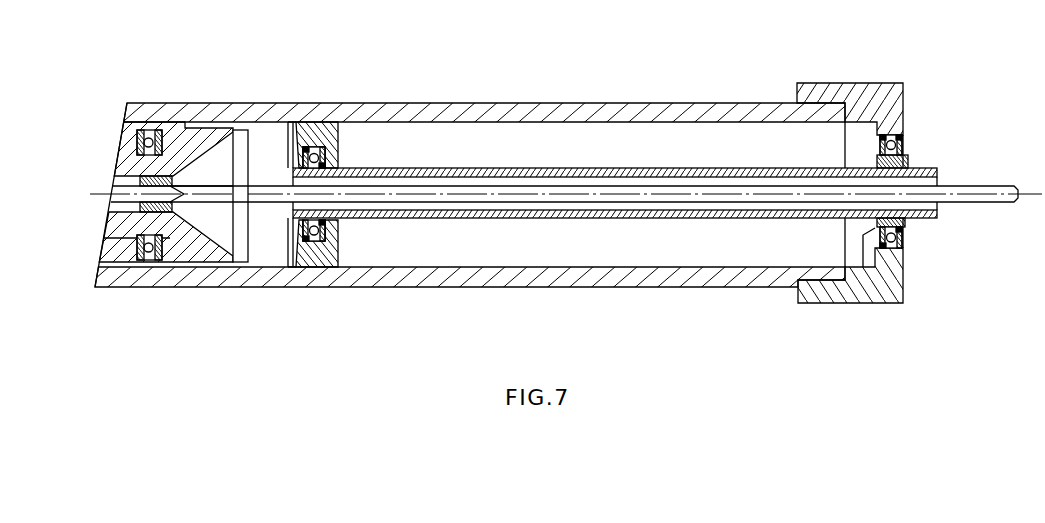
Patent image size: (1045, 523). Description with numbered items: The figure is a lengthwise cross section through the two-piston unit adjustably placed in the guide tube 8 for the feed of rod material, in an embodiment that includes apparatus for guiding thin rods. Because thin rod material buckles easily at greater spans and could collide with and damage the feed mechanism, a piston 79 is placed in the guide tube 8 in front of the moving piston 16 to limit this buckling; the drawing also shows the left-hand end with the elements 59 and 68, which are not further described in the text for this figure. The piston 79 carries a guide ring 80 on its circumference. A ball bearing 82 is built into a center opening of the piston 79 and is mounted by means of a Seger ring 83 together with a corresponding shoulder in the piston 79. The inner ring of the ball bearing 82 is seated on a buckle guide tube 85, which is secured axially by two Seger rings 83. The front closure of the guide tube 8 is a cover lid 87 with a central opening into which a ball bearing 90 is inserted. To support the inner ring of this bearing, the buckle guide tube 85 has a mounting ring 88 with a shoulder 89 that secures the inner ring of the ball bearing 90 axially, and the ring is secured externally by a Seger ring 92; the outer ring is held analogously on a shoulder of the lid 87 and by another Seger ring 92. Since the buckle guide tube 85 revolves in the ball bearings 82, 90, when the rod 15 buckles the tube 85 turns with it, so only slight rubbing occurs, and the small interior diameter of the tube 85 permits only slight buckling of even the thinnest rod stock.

The guide tube 8 is at (449, 113).
The rod 15 is at (977, 191).
The moving piston 16 is at (160, 313).
The hub 59 is at (208, 142).
The centering tip 68 is at (128, 193).
The piston 79 is at (337, 268).
The guide ring 80 is at (320, 131).
The ball bearing 82 is at (310, 268).
The Seger ring 83 is at (328, 166).
The buckle guide tube 85 is at (537, 172).
The cover lid 87 is at (851, 98).
The mounting ring 88 is at (910, 162).
The shoulder 89 is at (863, 303).
The ball bearing 90 is at (891, 143).
The Seger ring 92 is at (905, 248).